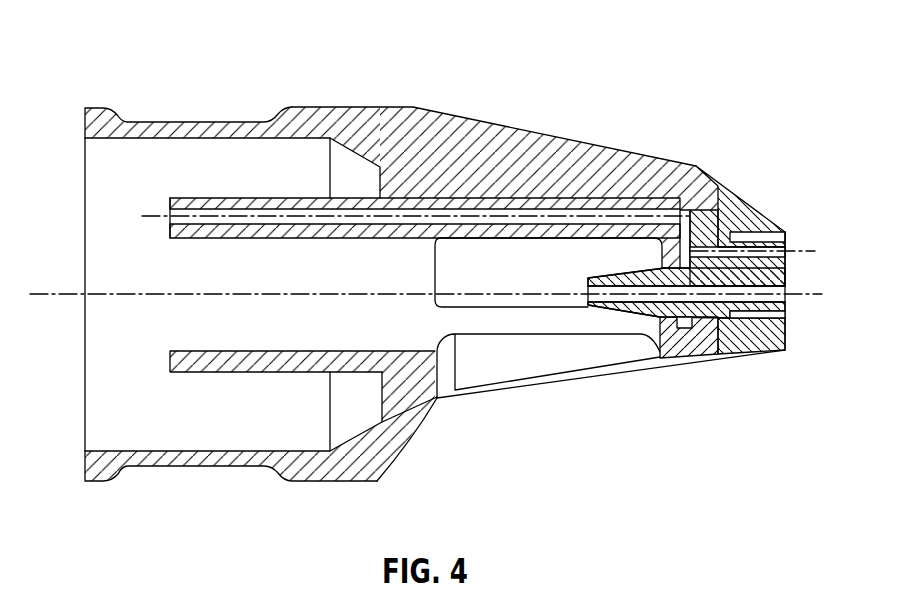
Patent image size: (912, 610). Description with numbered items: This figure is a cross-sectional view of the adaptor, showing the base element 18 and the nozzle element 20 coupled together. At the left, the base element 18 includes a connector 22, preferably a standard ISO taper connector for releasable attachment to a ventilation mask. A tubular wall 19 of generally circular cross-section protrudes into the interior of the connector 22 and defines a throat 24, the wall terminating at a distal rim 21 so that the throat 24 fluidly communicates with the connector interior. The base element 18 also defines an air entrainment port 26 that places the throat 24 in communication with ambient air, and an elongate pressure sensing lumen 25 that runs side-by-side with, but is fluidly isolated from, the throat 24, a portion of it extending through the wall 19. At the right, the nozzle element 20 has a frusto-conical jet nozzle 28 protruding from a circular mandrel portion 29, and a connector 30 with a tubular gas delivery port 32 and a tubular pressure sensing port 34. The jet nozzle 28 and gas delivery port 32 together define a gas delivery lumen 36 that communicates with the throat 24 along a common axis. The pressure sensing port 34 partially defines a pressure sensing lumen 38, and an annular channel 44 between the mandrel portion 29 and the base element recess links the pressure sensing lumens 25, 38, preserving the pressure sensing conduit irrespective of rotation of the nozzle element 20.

The base element 18 is at (476, 94).
The tubular wall 19 is at (205, 360).
The nozzle element 20 is at (783, 193).
The rim 21 is at (170, 358).
The connector 22 is at (167, 128).
The throat 24 is at (242, 255).
The pressure sensing lumen 25 is at (536, 214).
The air entrainment port 26 is at (627, 357).
The jet nozzle 28 is at (602, 308).
The mandrel portion 29 is at (702, 320).
The connector 30 is at (803, 225).
The gas delivery port 32 is at (752, 350).
The pressure sensing port 34 is at (748, 243).
The gas delivery lumen 36 is at (787, 288).
The pressure sensing lumen 38 is at (708, 236).
The channel 44 is at (683, 232).